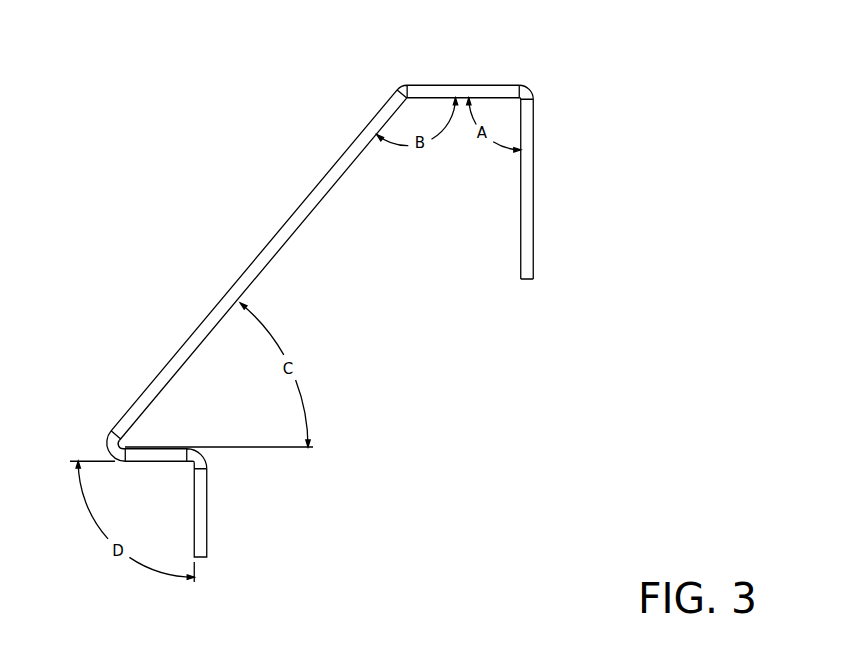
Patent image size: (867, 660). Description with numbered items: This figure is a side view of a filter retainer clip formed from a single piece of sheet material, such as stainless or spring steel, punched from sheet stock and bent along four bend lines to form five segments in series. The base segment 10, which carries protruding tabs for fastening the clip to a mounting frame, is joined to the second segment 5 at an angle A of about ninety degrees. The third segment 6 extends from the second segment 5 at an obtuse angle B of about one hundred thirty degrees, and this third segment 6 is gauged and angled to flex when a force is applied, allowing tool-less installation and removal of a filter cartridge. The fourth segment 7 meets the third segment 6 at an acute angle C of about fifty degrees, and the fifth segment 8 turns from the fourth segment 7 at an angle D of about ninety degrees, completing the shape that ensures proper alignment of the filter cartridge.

The second segment 5 is at (468, 84).
The third segment 6 is at (284, 223).
The fourth segment 7 is at (146, 459).
The fifth segment 8 is at (208, 502).
The base segment 10 is at (535, 212).